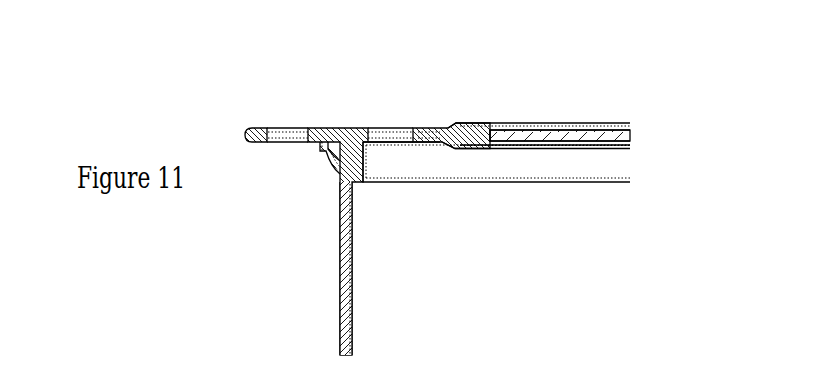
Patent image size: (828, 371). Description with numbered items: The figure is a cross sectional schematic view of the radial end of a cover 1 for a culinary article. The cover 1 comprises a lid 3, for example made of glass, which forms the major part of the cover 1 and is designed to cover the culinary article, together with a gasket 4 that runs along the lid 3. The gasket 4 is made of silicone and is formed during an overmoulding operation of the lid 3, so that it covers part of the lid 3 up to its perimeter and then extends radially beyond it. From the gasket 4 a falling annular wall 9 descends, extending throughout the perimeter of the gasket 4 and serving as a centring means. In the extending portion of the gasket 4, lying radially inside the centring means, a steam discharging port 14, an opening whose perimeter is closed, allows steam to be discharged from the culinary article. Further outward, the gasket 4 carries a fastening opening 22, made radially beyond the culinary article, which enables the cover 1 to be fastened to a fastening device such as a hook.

The cover 1 is at (597, 110).
The lid 3 is at (552, 138).
The gasket 4 is at (436, 140).
The annular wall 9 is at (352, 155).
The port 14 is at (395, 116).
The fastening opening 22 is at (292, 116).